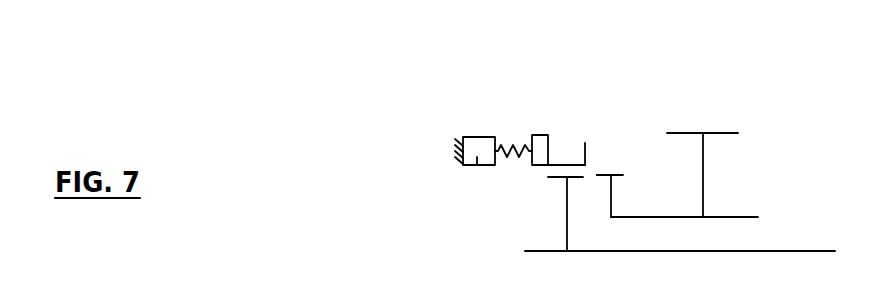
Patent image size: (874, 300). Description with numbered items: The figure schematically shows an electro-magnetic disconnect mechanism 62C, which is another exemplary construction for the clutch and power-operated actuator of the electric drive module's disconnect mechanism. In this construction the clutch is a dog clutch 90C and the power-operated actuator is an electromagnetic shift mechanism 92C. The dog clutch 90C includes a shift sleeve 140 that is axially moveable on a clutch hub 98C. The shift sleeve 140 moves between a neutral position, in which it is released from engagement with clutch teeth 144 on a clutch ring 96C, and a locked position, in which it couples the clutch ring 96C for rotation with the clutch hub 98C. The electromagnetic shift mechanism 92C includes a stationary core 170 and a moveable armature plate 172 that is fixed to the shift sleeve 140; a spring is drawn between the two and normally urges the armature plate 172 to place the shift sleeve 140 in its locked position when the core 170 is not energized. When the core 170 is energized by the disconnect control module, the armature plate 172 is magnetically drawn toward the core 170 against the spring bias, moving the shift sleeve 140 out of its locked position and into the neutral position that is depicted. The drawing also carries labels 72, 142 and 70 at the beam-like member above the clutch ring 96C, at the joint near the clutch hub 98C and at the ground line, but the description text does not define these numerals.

The disconnect mechanism 62C is at (660, 75).
The electromagnetic shift mechanism 92C is at (504, 132).
The armature plate 172 is at (540, 135).
The shift sleeve 140 is at (593, 153).
The dog clutch 90C is at (614, 152).
The beam 72 is at (718, 133).
The core 170 is at (477, 157).
The clutch teeth 144 is at (615, 175).
The clutch ring 96C is at (612, 201).
The clutch hub 98C is at (567, 218).
The pivot 142 is at (596, 179).
The ground 70 is at (781, 251).